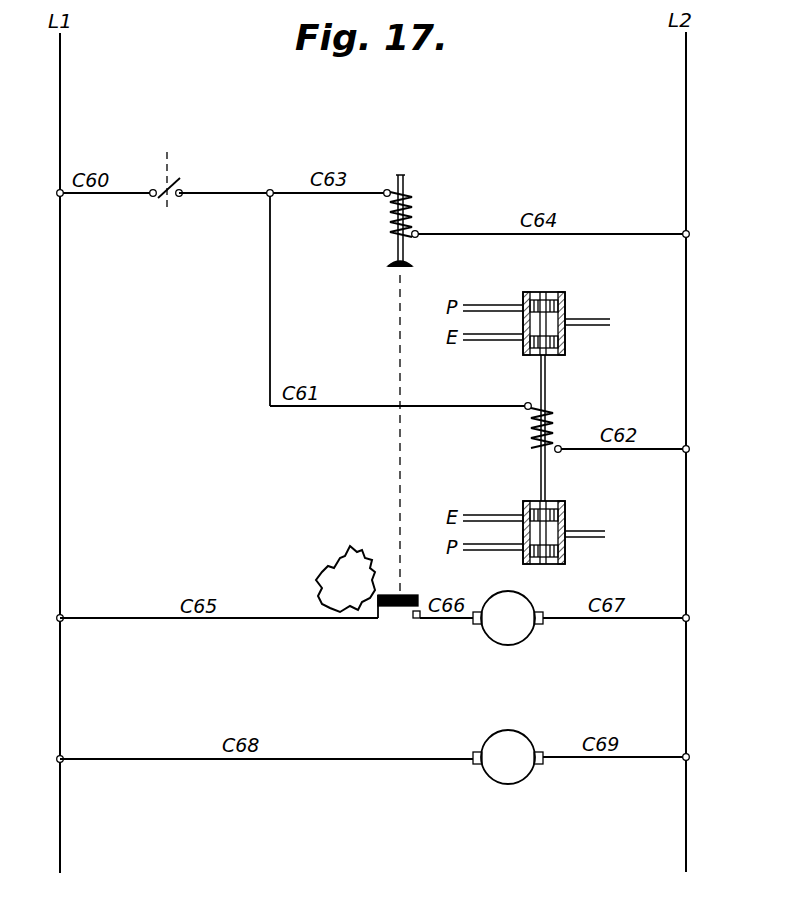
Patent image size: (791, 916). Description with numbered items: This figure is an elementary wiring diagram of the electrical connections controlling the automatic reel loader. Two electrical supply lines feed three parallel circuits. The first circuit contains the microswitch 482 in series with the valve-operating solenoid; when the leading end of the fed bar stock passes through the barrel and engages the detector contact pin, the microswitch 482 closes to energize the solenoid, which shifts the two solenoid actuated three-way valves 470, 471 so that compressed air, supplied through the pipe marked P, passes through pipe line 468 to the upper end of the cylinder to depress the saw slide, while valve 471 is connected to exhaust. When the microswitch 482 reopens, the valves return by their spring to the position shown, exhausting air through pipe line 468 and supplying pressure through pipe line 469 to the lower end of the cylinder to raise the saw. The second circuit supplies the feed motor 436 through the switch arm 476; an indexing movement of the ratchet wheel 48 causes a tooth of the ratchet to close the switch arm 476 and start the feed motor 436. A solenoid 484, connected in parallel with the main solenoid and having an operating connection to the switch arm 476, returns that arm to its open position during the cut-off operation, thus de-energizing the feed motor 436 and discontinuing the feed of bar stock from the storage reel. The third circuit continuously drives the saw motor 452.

The microswitch 482 is at (160, 192).
The solenoid 484 is at (410, 210).
The three-way valve 470 is at (566, 306).
The pipe line 468 is at (589, 327).
The three-way valve 471 is at (566, 516).
The pipe line 469 is at (589, 539).
The switch arm 476 is at (405, 598).
The ratchet wheel 48 is at (330, 580).
The feed motor 436 is at (511, 644).
The saw motor 452 is at (511, 783).